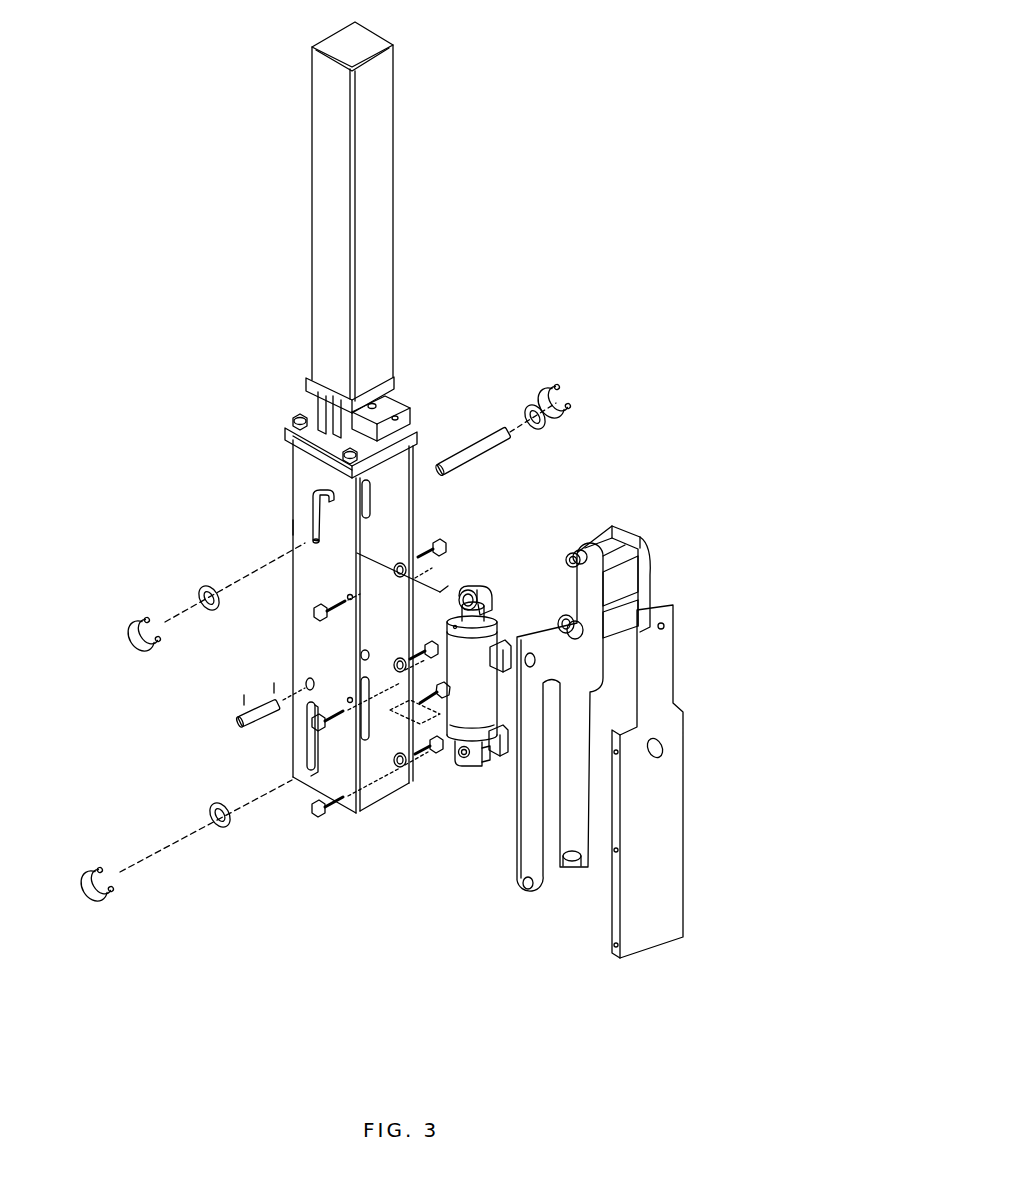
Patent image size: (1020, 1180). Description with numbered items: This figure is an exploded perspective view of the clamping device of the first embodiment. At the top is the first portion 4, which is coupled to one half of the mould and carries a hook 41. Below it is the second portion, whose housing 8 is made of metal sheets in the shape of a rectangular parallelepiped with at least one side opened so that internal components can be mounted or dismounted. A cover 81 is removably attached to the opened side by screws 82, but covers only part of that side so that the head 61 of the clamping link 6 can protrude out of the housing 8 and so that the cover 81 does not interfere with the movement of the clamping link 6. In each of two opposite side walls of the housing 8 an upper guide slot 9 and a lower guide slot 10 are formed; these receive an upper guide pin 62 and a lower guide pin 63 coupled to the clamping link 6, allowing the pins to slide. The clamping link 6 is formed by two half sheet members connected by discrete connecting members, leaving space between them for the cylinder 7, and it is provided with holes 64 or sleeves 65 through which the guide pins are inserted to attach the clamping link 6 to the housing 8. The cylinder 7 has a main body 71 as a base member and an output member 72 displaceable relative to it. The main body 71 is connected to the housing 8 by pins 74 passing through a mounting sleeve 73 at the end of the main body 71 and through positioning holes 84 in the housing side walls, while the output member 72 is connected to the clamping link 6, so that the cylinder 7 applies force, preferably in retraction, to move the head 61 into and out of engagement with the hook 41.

The first portion 4 is at (337, 235).
The hook 41 is at (400, 412).
The upper guide pin 62 is at (490, 447).
The head 61 is at (588, 620).
The screws 82 is at (445, 540).
The output member 72 is at (482, 595).
The holes 64 is at (568, 622).
The upper guide slot 9 is at (312, 497).
The housing 8 is at (300, 527).
The positioning holes 84 is at (305, 684).
The pins 74 is at (240, 718).
The lower guide slot 10 is at (310, 748).
The lower guide pin 63 is at (437, 697).
The mounting sleeve 73 is at (460, 755).
The cylinder 7 is at (463, 772).
The main body 71 is at (486, 703).
The clamping link 6 is at (530, 808).
The sleeves 65 is at (560, 862).
The cover 81 is at (668, 847).